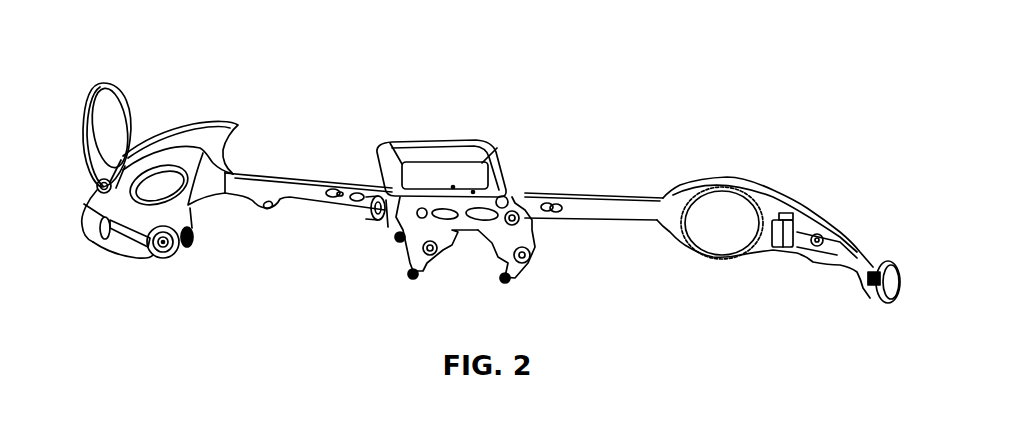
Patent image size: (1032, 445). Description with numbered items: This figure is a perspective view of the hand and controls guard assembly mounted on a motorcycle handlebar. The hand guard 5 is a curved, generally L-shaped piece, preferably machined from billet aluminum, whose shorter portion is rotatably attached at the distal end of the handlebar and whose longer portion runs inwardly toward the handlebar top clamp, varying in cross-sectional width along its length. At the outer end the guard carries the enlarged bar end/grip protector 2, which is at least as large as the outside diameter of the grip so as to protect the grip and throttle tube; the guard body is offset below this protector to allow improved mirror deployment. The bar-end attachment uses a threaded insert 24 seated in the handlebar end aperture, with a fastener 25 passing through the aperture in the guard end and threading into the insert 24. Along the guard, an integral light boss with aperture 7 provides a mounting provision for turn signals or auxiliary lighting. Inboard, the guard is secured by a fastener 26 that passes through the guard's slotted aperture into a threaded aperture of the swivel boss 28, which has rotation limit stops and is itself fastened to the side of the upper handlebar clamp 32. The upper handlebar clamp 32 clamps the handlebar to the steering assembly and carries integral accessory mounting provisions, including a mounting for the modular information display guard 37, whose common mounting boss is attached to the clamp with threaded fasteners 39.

The enlarged bar end/grip protector 2 is at (182, 266).
The hand guard 5 is at (111, 266).
The integral light boss with aperture 7 is at (275, 227).
The threaded insert 24 is at (878, 314).
The fastener 25 is at (155, 266).
The fastener 26 is at (527, 167).
The swivel boss 28 is at (385, 229).
The upper handlebar clamp 32 is at (552, 284).
The modular information display guard 37 is at (449, 109).
The threaded fasteners 39 is at (382, 162).